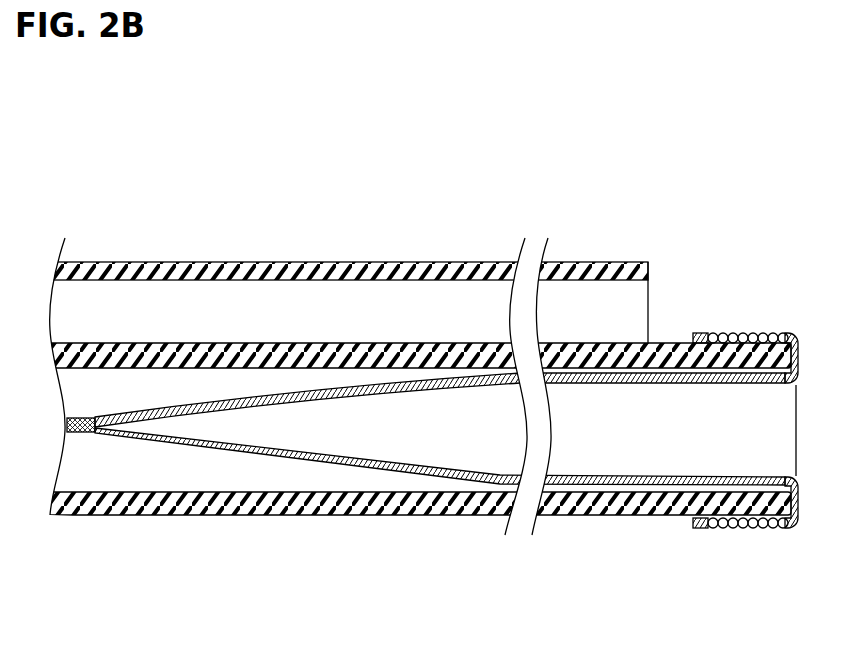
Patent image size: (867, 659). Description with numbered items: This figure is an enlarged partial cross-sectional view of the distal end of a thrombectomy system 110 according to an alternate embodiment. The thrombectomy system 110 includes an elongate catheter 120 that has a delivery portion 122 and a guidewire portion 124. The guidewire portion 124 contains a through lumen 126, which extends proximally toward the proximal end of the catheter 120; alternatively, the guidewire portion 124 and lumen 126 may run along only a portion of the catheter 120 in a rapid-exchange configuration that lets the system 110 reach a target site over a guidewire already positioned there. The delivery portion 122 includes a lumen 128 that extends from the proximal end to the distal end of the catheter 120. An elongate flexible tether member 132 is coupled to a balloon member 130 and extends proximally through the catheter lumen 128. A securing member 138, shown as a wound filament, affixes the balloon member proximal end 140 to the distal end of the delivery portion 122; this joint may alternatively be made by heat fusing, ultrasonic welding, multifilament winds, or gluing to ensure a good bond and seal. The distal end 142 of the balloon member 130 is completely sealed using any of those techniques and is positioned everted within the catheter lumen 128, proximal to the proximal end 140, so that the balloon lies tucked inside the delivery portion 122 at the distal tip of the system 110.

The thrombectomy system 110 is at (569, 110).
The elongate catheter 120 is at (213, 262).
The delivery portion 122 is at (657, 342).
The guidewire portion 124 is at (548, 262).
The through lumen 126 is at (372, 293).
The lumen 128 is at (237, 470).
The balloon member 130 is at (570, 480).
The elongate flexible tether member 132 is at (78, 433).
The securing member 138 is at (752, 528).
The balloon member proximal end 140 is at (640, 490).
The distal end of balloon member 142 is at (168, 432).